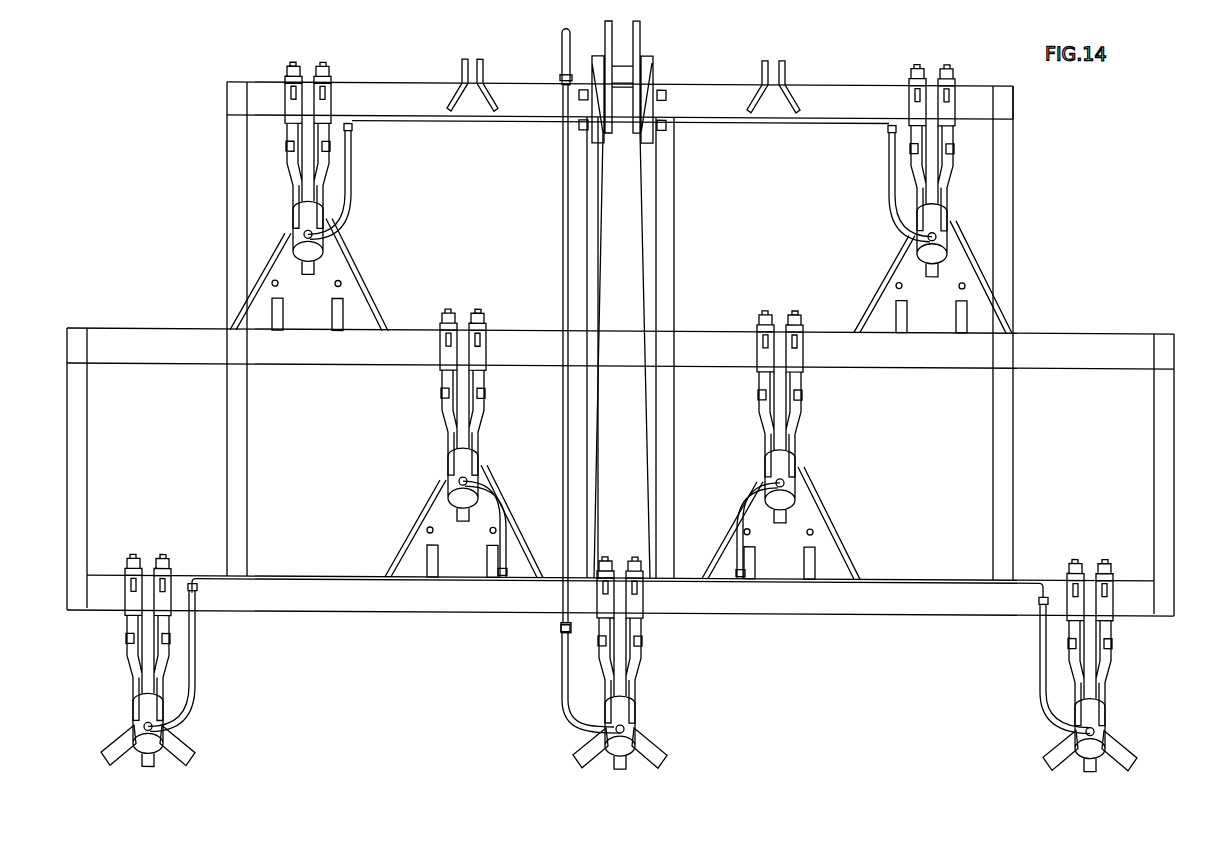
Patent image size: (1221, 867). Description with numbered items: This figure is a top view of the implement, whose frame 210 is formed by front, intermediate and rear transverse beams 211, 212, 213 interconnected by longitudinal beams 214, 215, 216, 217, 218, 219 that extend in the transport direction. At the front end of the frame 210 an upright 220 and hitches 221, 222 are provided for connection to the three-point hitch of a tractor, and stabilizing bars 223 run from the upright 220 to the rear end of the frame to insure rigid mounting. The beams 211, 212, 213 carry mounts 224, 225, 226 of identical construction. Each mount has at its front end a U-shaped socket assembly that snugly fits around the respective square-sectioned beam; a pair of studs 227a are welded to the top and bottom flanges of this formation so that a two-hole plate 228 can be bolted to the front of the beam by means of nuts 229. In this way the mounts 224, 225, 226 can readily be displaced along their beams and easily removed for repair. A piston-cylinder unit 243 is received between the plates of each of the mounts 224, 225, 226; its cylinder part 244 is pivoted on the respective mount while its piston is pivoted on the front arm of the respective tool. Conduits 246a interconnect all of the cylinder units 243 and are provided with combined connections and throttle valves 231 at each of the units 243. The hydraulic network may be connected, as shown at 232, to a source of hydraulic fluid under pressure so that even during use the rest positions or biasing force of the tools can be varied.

The frame 210 is at (410, 79).
The front transverse beam 211 is at (825, 96).
The intermediate transverse beam 212 is at (1062, 346).
The rear transverse beam 213 is at (930, 573).
The longitudinal beam 214 is at (80, 467).
The longitudinal beam 215 is at (240, 221).
The longitudinal beam 216 is at (578, 254).
The longitudinal beam 217 is at (668, 231).
The longitudinal beam 218 is at (1000, 244).
The longitudinal beam 219 is at (1168, 439).
The upright 220 is at (636, 45).
The hitch 221 is at (480, 55).
The hitch 222 is at (776, 53).
The stabilizing bar 223 is at (652, 463).
The mount 224 is at (312, 156).
The mount 225 is at (478, 398).
The mount 226 is at (172, 675).
The stud 227a is at (288, 88).
The two-hole plate 228 is at (318, 61).
The nut 229 is at (288, 66).
The combined connection and throttle valve 231 is at (740, 556).
The connection to hydraulic fluid source 232 is at (561, 42).
The piston-cylinder unit 243 is at (288, 237).
The cylinder part 244 is at (310, 216).
The conduit 246a is at (352, 163).